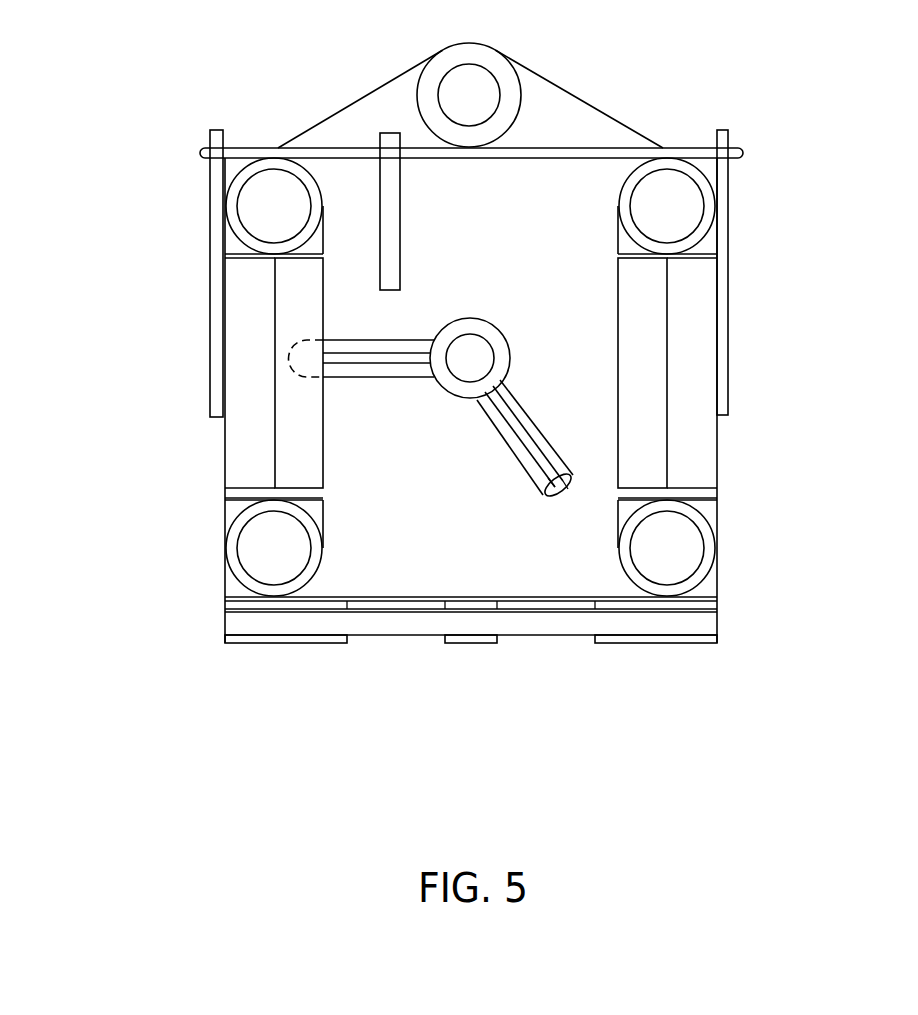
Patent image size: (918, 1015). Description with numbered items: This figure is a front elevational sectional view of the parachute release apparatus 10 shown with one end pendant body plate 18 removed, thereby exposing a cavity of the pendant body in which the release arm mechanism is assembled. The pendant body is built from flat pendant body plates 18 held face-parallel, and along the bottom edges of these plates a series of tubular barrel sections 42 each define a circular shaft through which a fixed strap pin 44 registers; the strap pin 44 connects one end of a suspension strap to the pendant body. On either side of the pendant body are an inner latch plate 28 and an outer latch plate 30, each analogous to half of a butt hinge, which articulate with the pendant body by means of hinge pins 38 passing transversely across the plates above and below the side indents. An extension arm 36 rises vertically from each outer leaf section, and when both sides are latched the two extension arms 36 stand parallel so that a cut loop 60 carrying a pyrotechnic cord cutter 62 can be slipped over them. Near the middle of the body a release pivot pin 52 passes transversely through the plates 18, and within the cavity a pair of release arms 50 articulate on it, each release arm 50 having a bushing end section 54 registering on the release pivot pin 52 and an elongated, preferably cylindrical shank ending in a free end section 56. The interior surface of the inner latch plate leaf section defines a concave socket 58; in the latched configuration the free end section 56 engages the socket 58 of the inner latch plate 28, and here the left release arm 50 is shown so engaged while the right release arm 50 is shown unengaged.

The parachute release apparatus 10 is at (600, 95).
The pendant body plate 18 is at (395, 548).
The inner latch plate 28 is at (296, 455).
The outer latch plate 30 is at (237, 432).
The extension arm 36 is at (215, 205).
The hinge pin 38 is at (677, 557).
The barrel section 42 is at (296, 642).
The strap pin 44 is at (397, 622).
The release arm 50 is at (525, 433).
The release pivot pin 52 is at (469, 358).
The bushing end section 54 is at (502, 367).
The free end section 56 is at (556, 487).
The concave socket 58 is at (295, 365).
The cut loop 60 is at (345, 151).
The pyrotechnic cord cutter 62 is at (383, 233).